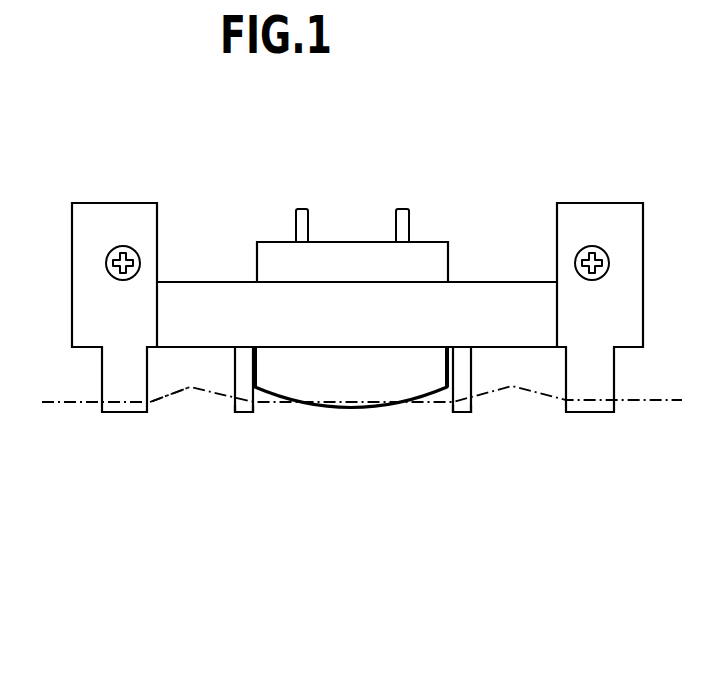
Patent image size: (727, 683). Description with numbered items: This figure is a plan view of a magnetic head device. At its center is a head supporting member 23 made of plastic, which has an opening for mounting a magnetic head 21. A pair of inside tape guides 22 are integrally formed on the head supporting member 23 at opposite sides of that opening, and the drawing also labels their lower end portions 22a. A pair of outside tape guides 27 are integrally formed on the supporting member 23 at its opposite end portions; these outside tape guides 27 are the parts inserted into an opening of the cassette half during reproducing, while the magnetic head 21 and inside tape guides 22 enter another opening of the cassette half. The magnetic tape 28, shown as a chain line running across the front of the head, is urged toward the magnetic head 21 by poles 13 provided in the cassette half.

The optical axis / light path line 13 is at (190, 396).
The light emitting element package 21 is at (427, 250).
The mounting legs 22 is at (244, 380).
The leg tips 22a is at (250, 413).
The holder body 23 is at (285, 294).
The mounting blocks with screws 27 is at (105, 385).
The reference plane 28 is at (178, 392).